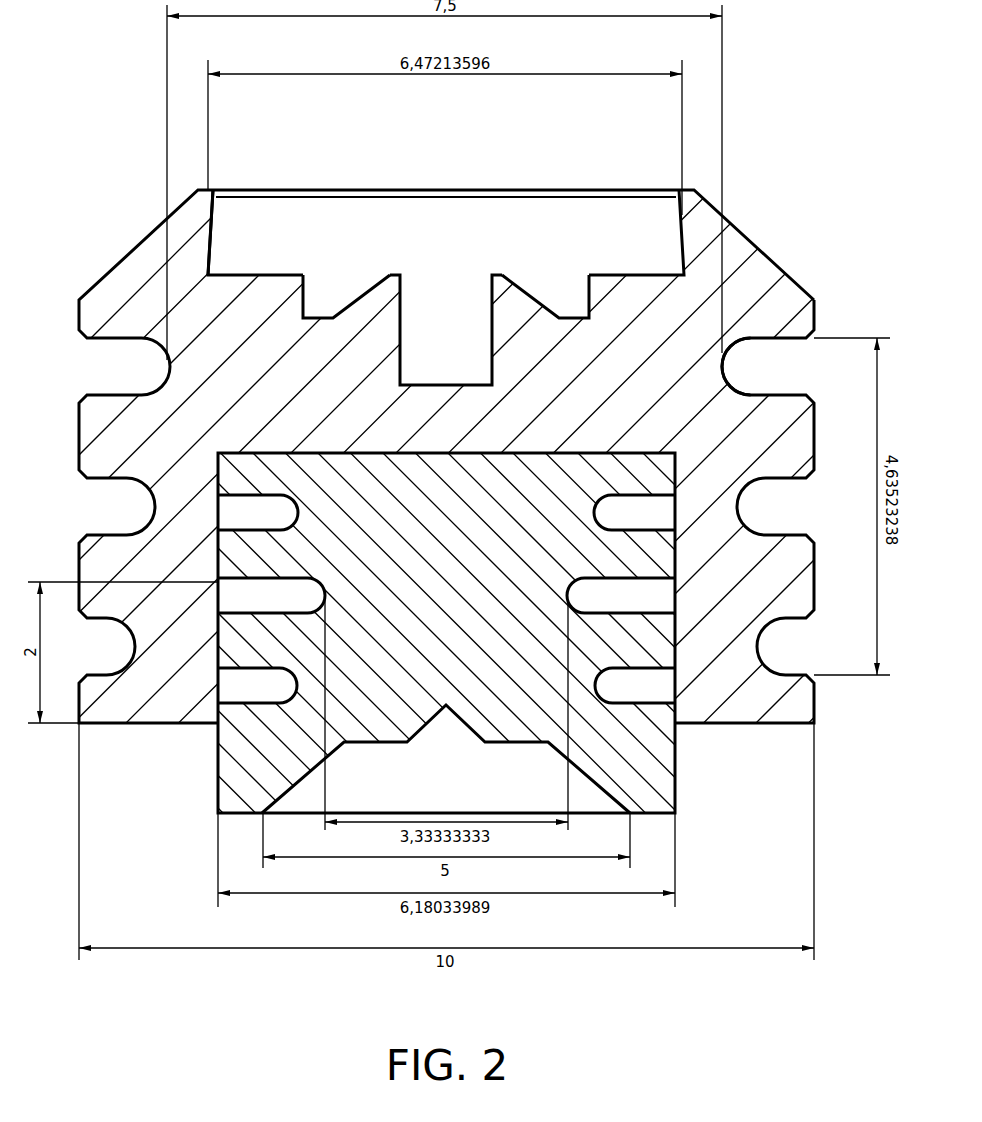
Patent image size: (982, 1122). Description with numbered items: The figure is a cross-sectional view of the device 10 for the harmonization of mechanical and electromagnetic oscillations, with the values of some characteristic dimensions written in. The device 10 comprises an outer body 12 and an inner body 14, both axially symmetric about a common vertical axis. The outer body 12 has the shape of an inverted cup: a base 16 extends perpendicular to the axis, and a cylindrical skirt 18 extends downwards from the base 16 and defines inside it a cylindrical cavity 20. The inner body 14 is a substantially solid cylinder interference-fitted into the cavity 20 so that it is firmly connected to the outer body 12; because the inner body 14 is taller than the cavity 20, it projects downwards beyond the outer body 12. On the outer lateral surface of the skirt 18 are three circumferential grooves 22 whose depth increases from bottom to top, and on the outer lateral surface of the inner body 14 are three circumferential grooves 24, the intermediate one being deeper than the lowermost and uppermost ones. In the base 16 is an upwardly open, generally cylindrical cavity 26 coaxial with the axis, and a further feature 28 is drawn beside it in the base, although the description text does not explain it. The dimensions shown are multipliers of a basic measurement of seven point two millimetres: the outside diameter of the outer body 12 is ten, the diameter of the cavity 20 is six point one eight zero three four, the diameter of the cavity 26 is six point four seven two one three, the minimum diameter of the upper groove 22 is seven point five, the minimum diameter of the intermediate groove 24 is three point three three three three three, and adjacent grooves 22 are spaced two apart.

The device for the harmonization of mechanical and electromagnetic oscillations 10 is at (491, 501).
The outer body 12 is at (760, 283).
The inner body 14 is at (491, 721).
The base 16 is at (615, 373).
The skirt 18 is at (783, 582).
The cylindrical cavity 20 is at (663, 632).
The circumferential grooves 22 is at (762, 342).
The circumferential grooves 24 is at (290, 685).
The cavity 26 is at (213, 237).
The notch 28 is at (307, 303).